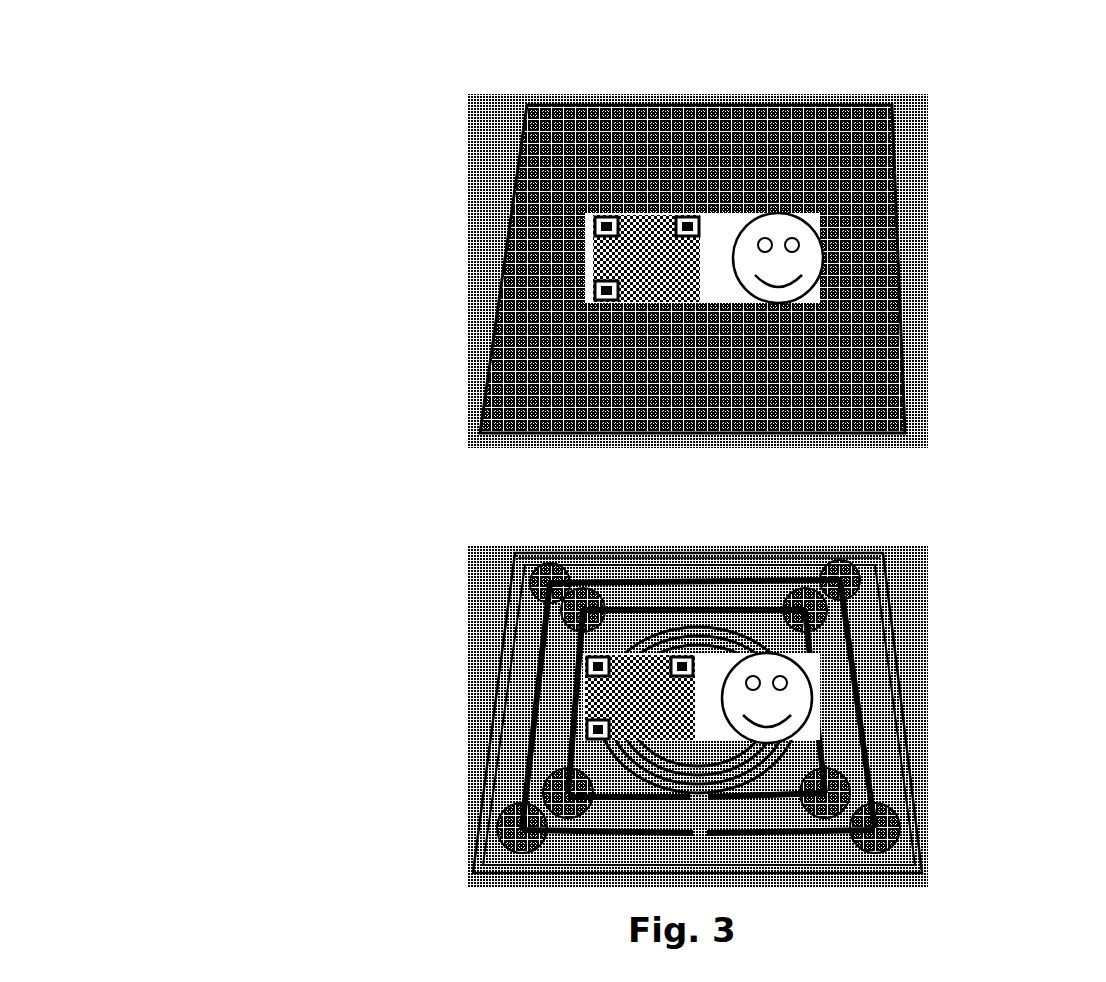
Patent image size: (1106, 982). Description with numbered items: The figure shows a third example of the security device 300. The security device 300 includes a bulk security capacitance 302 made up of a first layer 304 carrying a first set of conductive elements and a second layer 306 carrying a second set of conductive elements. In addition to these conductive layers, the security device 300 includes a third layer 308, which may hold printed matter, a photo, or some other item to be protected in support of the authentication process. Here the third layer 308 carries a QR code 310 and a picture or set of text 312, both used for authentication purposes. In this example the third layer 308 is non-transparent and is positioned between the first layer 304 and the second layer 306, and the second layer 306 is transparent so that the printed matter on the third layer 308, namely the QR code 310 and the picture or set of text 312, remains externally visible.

The security device 300 is at (146, 99).
The bulk security capacitance 302 is at (766, 676).
The first layer 304 is at (859, 629).
The second layer 306 is at (844, 573).
The third layer 308 is at (691, 85).
The QR code 310 is at (579, 248).
The picture or set of text 312 is at (837, 251).